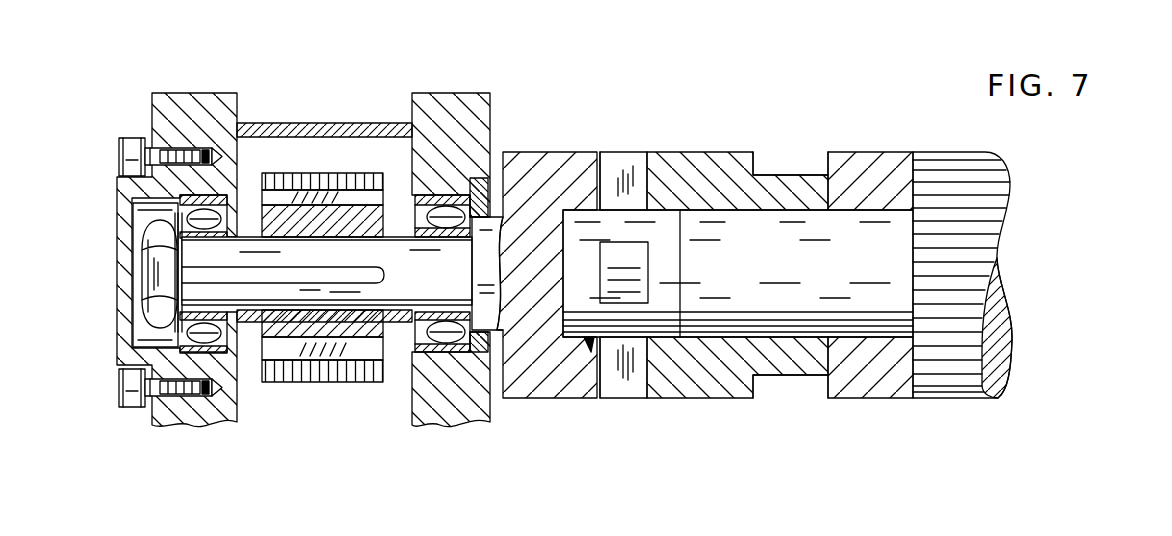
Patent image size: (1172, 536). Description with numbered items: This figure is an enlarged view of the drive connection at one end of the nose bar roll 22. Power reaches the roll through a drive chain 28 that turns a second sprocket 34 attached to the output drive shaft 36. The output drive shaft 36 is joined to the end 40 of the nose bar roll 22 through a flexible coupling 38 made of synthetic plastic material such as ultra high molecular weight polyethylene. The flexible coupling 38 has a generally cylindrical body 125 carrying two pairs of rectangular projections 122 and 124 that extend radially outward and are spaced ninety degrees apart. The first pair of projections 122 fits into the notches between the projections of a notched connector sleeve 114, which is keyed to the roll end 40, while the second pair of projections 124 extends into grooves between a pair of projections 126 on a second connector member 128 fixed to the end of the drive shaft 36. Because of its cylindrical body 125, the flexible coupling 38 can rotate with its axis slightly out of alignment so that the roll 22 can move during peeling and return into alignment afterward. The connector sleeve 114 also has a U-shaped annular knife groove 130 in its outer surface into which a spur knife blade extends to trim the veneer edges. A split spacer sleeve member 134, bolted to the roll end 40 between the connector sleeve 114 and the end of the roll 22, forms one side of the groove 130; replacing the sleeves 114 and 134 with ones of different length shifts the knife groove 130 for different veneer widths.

The nose bar roll 22 is at (955, 375).
The drive chain 28 is at (306, 172).
The second sprocket 34 is at (325, 350).
The output drive shaft 36 is at (402, 278).
The flexible coupling 38 is at (589, 346).
The end of the nose bar roll 40 is at (750, 293).
The notched connector sleeve 114 is at (710, 150).
The first pair of projections 122 is at (637, 274).
The second pair of projections 124 is at (631, 170).
The body 125 is at (682, 235).
The projections 126 is at (583, 170).
The second connector member 128 is at (705, 258).
The knife groove 130 is at (788, 175).
The split spacer sleeve member 134 is at (872, 152).